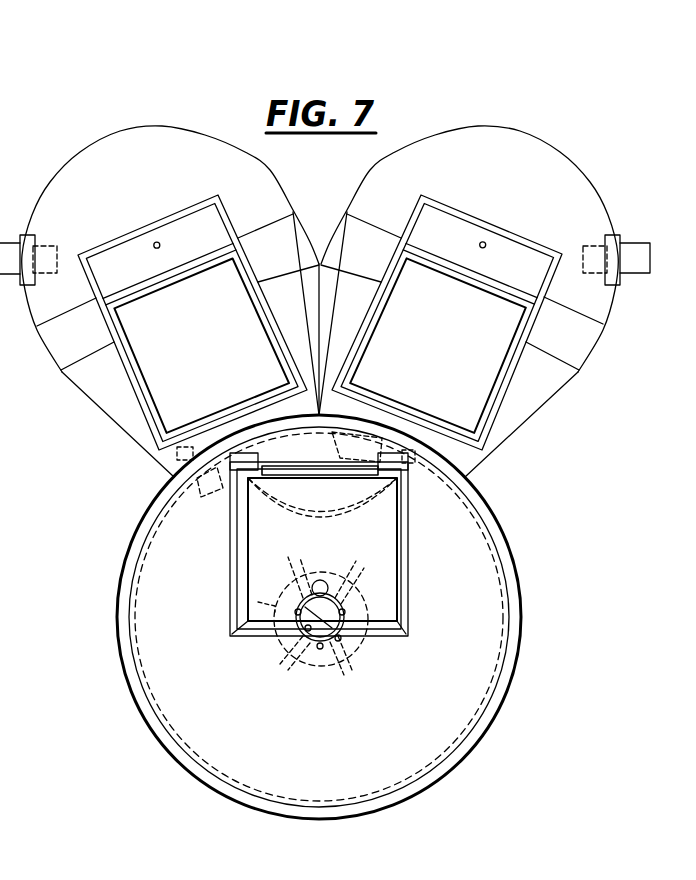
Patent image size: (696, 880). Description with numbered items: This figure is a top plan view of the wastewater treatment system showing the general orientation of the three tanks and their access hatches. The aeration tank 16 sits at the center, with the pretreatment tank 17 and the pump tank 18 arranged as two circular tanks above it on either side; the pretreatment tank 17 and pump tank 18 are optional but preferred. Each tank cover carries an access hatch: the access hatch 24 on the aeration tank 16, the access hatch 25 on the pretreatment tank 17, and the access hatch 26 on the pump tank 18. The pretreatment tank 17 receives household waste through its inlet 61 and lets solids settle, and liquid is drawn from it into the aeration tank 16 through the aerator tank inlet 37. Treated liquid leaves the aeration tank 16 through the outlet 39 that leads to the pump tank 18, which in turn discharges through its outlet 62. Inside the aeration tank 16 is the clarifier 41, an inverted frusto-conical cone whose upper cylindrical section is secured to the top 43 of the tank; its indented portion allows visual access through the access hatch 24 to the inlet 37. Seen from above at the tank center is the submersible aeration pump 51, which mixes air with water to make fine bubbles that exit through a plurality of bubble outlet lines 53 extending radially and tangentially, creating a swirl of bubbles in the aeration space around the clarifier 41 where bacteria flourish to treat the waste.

The aeration tank 16 is at (112, 630).
The pretreatment tank 17 is at (504, 309).
The pump tank 18 is at (167, 275).
The access hatch 24 is at (228, 522).
The access hatch 25 is at (512, 398).
The access hatch 26 is at (262, 274).
The aerator tank inlet 37 is at (490, 476).
The outlet 39 is at (187, 458).
The clarifier cone 41 is at (137, 674).
The top of the aeration tank 43 is at (345, 507).
The aeration pump 51 is at (316, 652).
The bubble outlet lines 53 is at (338, 657).
The inlet 61 is at (633, 245).
The outlet 62 is at (5, 243).